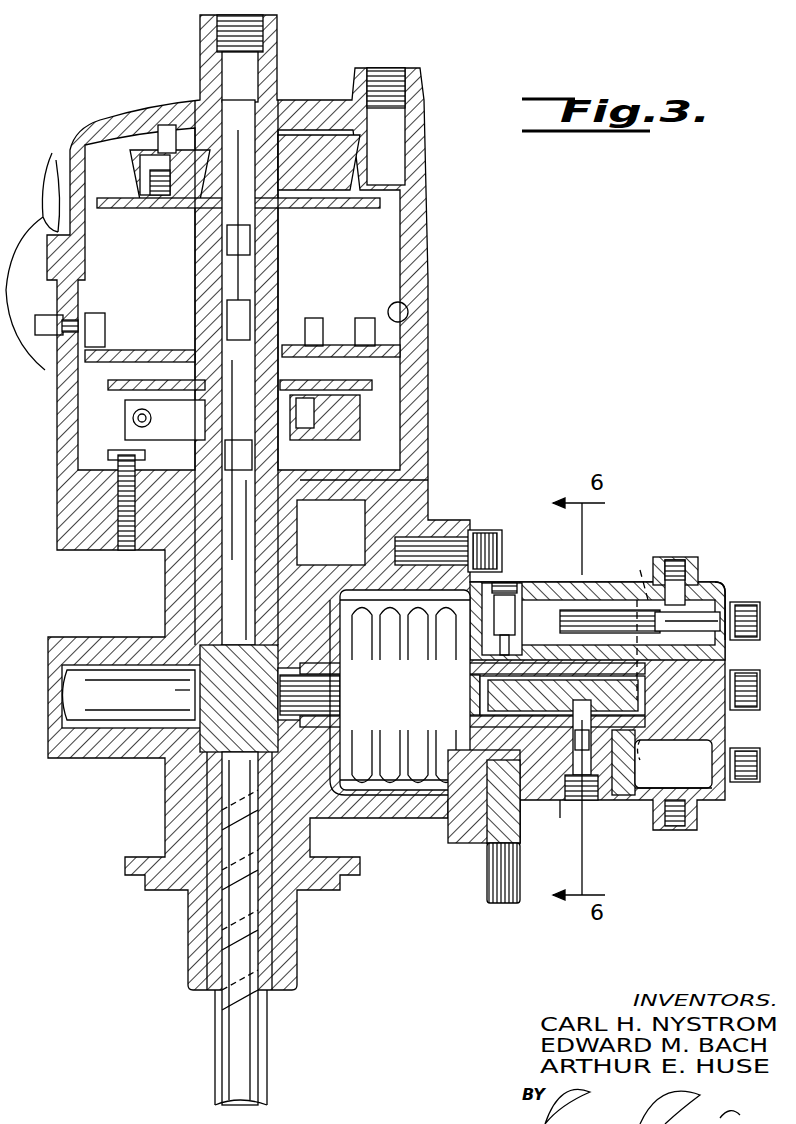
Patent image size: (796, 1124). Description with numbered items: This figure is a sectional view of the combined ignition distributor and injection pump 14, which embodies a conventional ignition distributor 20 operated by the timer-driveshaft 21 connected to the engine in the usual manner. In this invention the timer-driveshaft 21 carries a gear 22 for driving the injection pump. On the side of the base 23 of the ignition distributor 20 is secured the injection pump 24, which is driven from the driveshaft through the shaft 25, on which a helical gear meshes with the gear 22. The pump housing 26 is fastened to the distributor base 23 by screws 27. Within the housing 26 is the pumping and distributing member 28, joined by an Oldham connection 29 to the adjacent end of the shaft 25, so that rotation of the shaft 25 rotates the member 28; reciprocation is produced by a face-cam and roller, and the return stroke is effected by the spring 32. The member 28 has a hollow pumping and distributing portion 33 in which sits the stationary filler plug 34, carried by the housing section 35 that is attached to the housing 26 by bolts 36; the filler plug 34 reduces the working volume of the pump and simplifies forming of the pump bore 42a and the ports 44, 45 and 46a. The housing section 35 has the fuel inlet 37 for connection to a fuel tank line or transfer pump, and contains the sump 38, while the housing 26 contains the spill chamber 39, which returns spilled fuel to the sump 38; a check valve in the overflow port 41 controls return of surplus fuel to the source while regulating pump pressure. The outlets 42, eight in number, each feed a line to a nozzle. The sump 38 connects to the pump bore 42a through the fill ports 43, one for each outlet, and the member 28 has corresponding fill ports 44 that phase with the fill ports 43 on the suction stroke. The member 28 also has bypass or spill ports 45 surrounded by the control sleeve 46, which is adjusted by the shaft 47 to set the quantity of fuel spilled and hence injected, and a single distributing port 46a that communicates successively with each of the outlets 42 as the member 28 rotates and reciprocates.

The combined ignition distributor and injection pump 14 is at (495, 432).
The ignition distributor 20 is at (432, 378).
The timer-driveshaft 21 is at (235, 562).
The gear 22 is at (225, 678).
The base 23 is at (405, 525).
The injection pump 24 is at (654, 530).
The shaft 25 is at (125, 706).
The pump housing 26 is at (553, 595).
The screws 27 is at (487, 538).
The pumping and distributing member 28 is at (425, 672).
The Oldham connection 29 is at (310, 760).
The spring 32 is at (385, 750).
The hollow pumping and distributing portion 33 is at (605, 800).
The stationary filler plug 34 is at (738, 675).
The housing section 35 is at (722, 592).
The bolts 36 is at (745, 608).
The fuel inlet 37 is at (675, 828).
The sump 38 is at (673, 773).
The spill chamber 39 is at (530, 620).
The overflow port 41 is at (680, 560).
The outlets 42 is at (590, 805).
The pump bore 42a is at (458, 825).
The fill ports 43 is at (639, 658).
The fill ports 44 is at (673, 763).
The bypass or spill ports 45 is at (455, 690).
The control sleeve 46 is at (516, 655).
The distributing port 46a is at (560, 818).
The shaft 47 is at (492, 885).